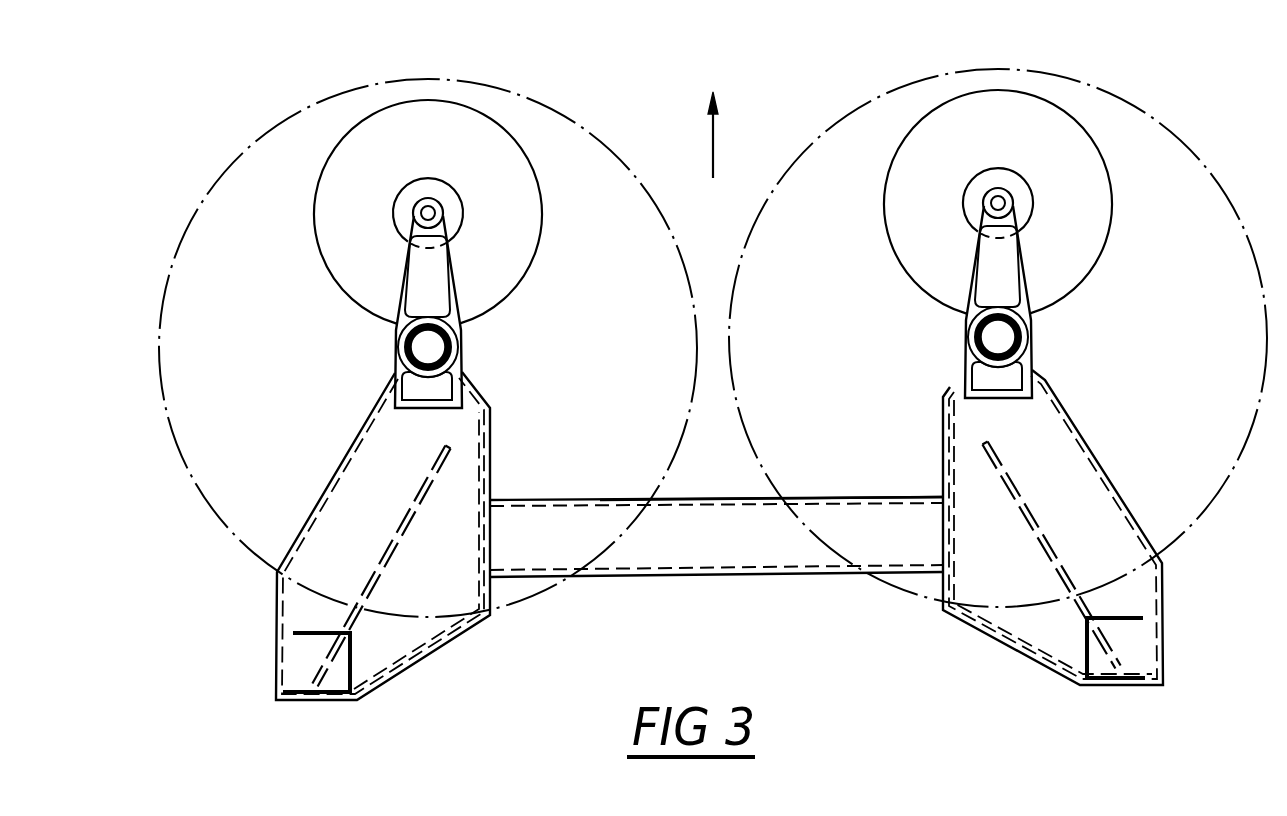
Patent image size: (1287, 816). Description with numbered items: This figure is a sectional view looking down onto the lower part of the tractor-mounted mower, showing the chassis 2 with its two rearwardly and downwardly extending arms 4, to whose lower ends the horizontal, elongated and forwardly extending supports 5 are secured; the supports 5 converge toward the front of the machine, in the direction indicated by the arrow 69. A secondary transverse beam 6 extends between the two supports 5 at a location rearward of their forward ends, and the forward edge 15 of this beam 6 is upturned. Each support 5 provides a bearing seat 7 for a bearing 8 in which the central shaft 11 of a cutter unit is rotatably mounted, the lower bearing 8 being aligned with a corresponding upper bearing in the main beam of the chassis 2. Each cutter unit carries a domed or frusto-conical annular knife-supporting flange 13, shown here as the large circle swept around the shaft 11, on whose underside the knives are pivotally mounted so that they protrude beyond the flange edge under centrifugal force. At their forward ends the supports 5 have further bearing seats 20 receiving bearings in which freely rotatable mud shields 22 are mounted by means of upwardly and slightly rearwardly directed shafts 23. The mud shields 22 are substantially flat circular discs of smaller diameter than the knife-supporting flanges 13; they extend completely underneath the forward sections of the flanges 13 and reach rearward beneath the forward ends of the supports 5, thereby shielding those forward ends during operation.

The chassis 2 is at (272, 640).
The arms 4 is at (355, 663).
The supports 5 is at (457, 636).
The secondary transverse beam 6 is at (755, 577).
The bearing seats 7 is at (440, 386).
The bearings 8 is at (452, 344).
The central shaft 11 is at (420, 346).
The knife-supporting flange 13 is at (221, 521).
The forward edge 15 is at (745, 500).
The bearing seats 20 is at (443, 216).
The mud shields 22 is at (537, 257).
The shaft 23 is at (431, 211).
The arrow 69 is at (748, 135).